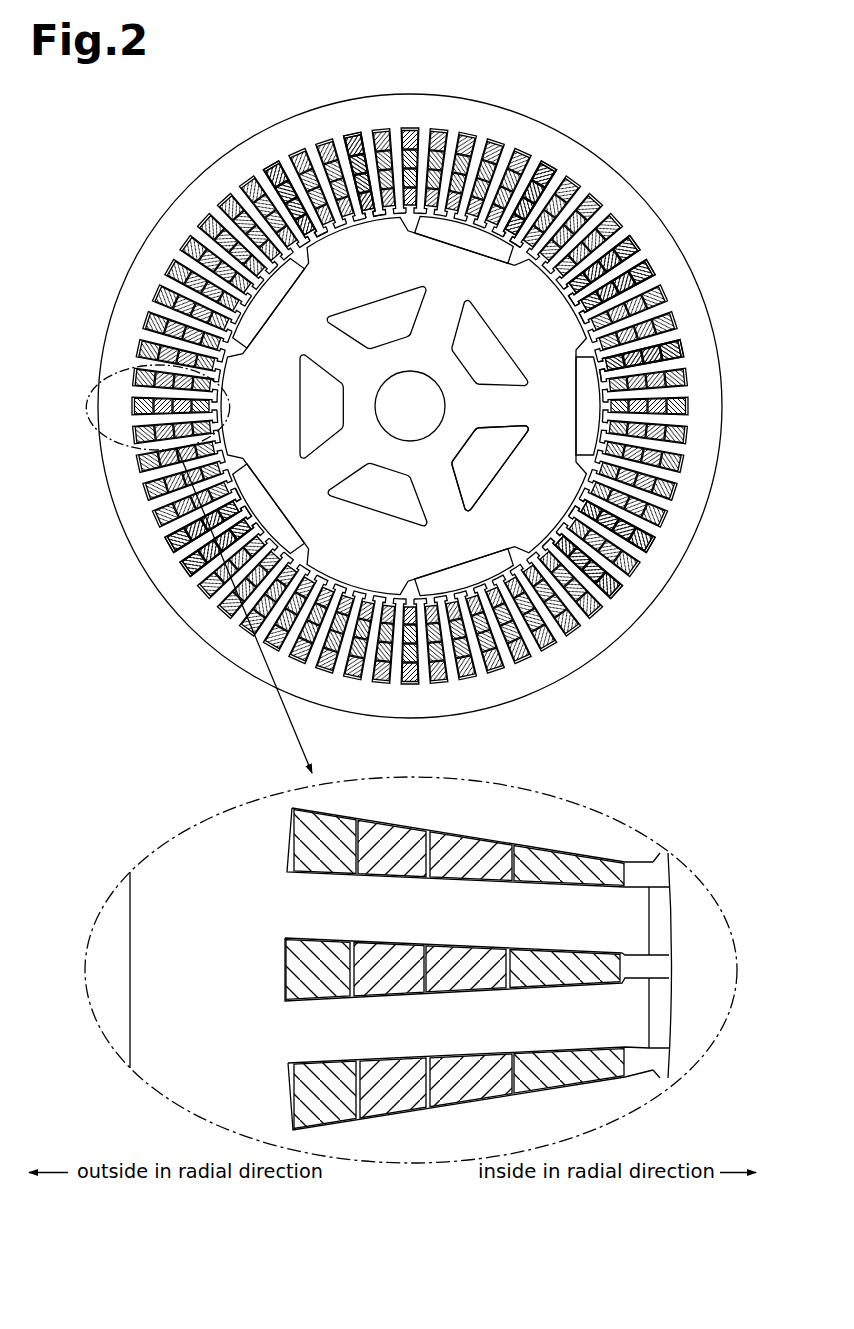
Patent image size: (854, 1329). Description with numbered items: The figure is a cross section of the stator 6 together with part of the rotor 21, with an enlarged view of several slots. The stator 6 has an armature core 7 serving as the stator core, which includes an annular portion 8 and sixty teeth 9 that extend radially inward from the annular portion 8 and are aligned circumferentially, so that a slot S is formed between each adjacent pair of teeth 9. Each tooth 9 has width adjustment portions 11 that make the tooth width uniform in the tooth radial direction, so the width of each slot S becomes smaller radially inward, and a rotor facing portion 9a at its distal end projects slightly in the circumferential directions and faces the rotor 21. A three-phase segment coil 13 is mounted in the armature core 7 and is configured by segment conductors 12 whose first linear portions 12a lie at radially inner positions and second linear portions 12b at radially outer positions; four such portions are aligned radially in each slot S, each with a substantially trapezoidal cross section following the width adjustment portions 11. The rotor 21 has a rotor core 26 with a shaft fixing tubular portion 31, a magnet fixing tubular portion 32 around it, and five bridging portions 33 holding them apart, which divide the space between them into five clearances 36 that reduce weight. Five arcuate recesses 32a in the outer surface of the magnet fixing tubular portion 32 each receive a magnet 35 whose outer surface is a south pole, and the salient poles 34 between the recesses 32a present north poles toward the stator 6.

The stator 6 is at (507, 104).
The armature core 7 is at (633, 184).
The annular portion 8 is at (710, 331).
The teeth 9 is at (570, 300).
The rotor facing portion 9a is at (655, 962).
The width adjustment portions 11 is at (392, 874).
The segment conductors 12 is at (605, 258).
The first linear portions 12a is at (475, 988).
The second linear portions 12b is at (303, 988).
The segment coil 13 is at (552, 166).
The rotor 21 is at (377, 211).
The rotor core 26 is at (660, 540).
The shaft fixing tubular portion 31 is at (380, 467).
The magnet fixing tubular portion 32 is at (490, 510).
The arcuate recesses 32a is at (583, 400).
The bridging portions 33 is at (337, 347).
The salient poles 34 is at (292, 205).
The magnets 35 is at (287, 290).
The clearances 36 is at (471, 365).
The slots S is at (239, 532).